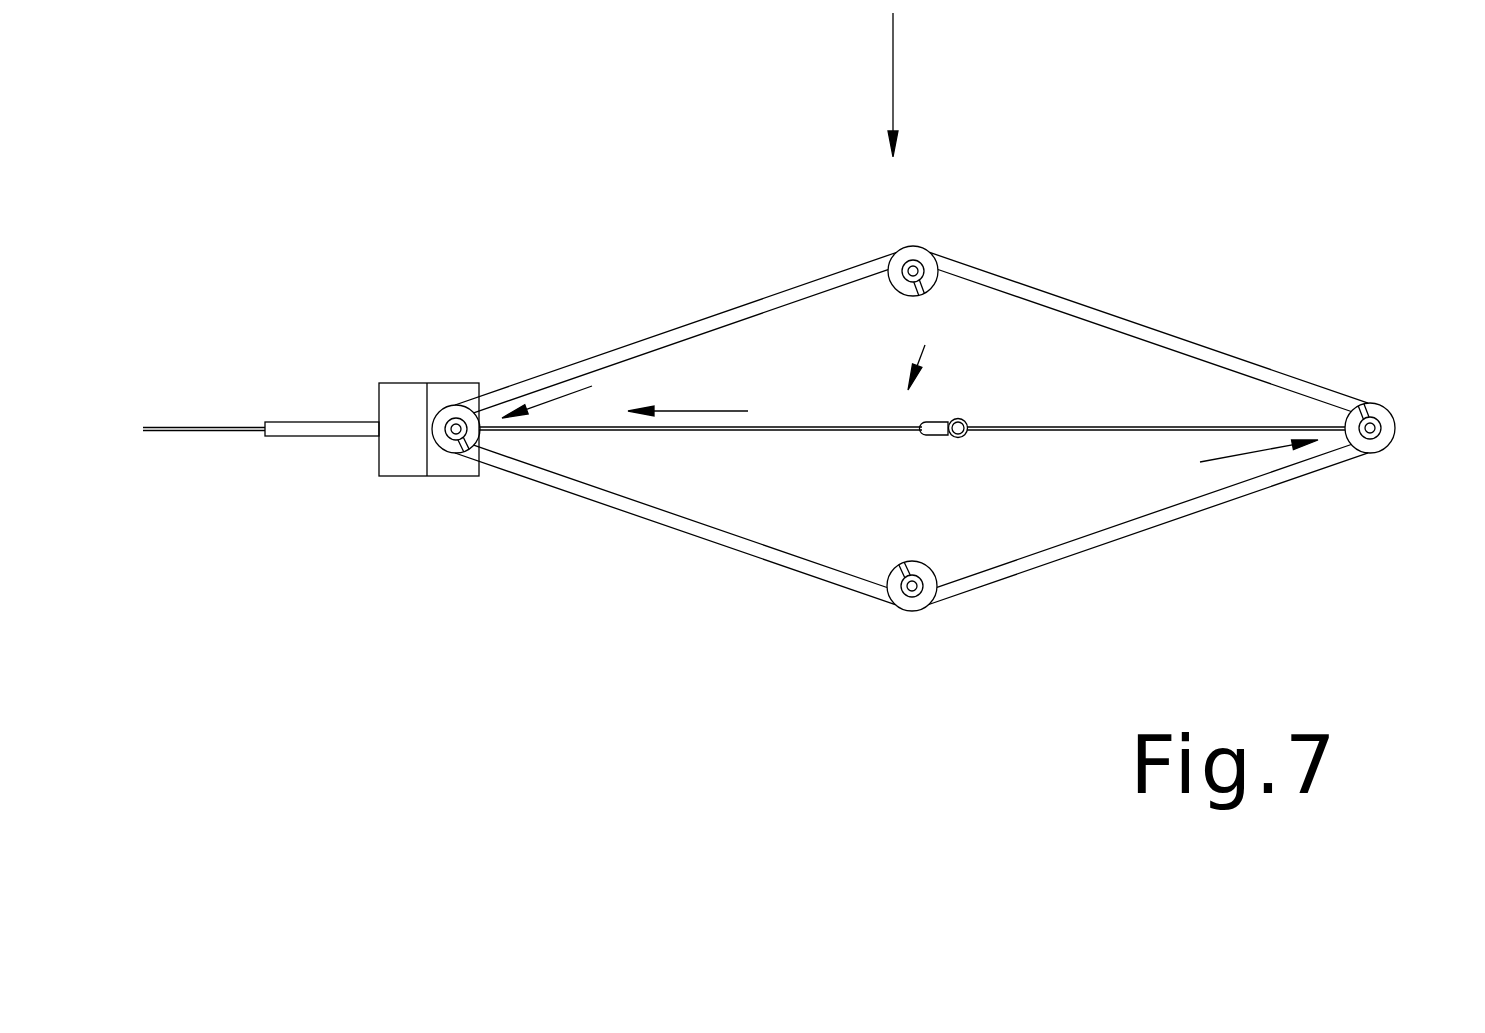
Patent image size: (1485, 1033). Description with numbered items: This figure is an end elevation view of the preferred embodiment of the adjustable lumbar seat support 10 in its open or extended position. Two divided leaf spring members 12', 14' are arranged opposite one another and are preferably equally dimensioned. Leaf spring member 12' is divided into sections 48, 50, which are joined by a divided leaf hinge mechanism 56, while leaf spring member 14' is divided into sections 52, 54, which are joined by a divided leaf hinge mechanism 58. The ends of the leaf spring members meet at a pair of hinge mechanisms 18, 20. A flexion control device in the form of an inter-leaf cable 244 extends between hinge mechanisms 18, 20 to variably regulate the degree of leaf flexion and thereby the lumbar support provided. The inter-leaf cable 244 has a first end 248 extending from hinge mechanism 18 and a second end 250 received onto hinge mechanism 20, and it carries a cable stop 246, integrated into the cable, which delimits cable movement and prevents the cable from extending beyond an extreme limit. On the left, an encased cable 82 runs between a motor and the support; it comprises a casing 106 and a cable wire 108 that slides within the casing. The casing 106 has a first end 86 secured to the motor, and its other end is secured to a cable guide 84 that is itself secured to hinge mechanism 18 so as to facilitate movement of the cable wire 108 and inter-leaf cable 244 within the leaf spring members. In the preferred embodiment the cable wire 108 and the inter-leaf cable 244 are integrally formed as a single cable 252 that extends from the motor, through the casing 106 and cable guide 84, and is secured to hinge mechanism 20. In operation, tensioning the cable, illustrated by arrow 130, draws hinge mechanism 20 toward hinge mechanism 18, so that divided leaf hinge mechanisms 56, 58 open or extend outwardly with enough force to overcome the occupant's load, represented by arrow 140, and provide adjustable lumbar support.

The adjustable lumbar seat support 10 is at (747, 206).
The leaf spring member 12' is at (1150, 319).
The leaf spring member 14' is at (675, 536).
The hinge mechanism 18 is at (450, 430).
The hinge mechanism 20 is at (1381, 410).
The section 48 is at (1281, 370).
The section 50 is at (549, 367).
The section 52 is at (1160, 525).
The section 54 is at (538, 483).
The divided leaf hinge mechanism 56 is at (905, 262).
The divided leaf hinge mechanism 58 is at (900, 595).
The encased cable 82 is at (265, 474).
The cable guide 84 is at (452, 383).
The first end 86 is at (342, 384).
The casing 106 is at (330, 437).
The cable wire 108 is at (143, 429).
The arrow 130 is at (698, 411).
The arrow 140 is at (893, 62).
The inter-leaf cable 244 is at (862, 399).
The cable stop 246 is at (966, 420).
The first end 248 is at (577, 392).
The second end 250 is at (1226, 462).
The single cable 252 is at (928, 349).